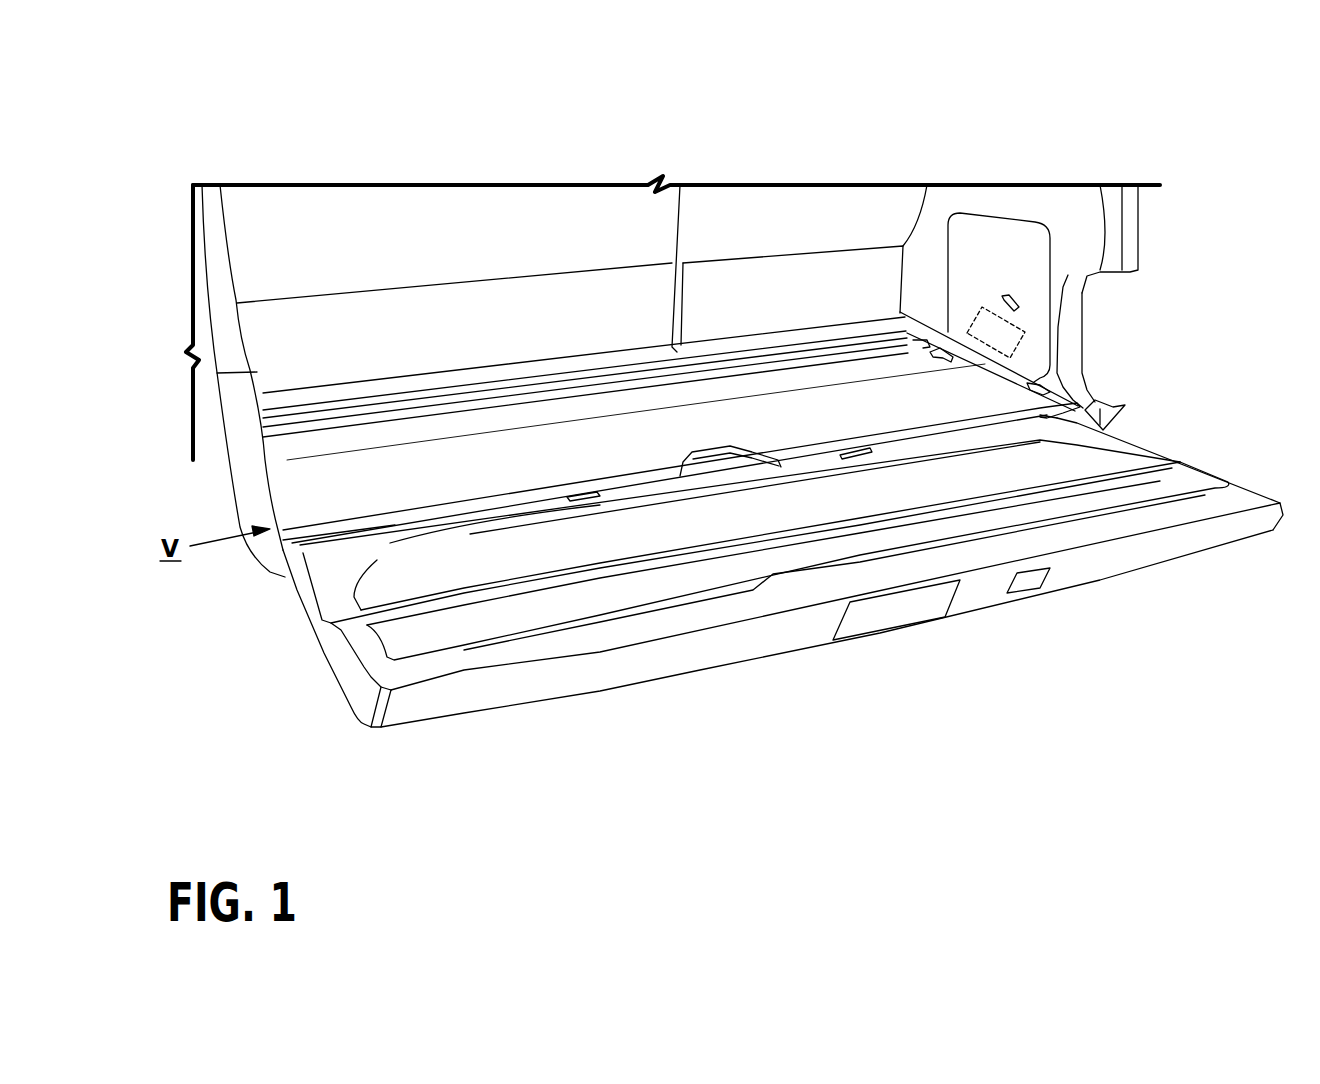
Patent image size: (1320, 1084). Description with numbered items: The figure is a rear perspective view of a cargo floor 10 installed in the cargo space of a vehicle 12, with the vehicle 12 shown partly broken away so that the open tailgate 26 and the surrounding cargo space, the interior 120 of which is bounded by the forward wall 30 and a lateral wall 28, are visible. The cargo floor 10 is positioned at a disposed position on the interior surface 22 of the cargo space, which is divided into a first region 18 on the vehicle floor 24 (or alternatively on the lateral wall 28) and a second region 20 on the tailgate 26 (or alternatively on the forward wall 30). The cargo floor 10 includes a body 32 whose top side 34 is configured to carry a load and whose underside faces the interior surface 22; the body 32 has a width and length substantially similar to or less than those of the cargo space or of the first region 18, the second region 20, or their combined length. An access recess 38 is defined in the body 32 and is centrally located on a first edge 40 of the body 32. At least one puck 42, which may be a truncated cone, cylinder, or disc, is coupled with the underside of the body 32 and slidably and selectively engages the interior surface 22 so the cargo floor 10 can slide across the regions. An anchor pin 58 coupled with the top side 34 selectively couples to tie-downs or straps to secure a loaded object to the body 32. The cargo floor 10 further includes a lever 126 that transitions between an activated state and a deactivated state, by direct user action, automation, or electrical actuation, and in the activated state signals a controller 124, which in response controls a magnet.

The cargo floor 10 is at (1109, 379).
The vehicle 12 is at (1132, 240).
The first region 18 is at (1100, 394).
The second region 20 is at (1098, 461).
The interior surface 22 is at (748, 513).
The vehicle floor 24 is at (340, 537).
The tailgate 26 is at (500, 690).
The lateral wall 28 is at (950, 205).
The forward wall 30 is at (463, 232).
The body 32 is at (812, 407).
The top side 34 is at (558, 465).
The access recess 38 is at (713, 440).
The first edge 40 is at (393, 513).
The puck 42 is at (1048, 422).
The anchor pin 58 is at (1030, 390).
The interior 120 is at (350, 228).
The controller 124 is at (1022, 345).
The lever 126 is at (1022, 300).